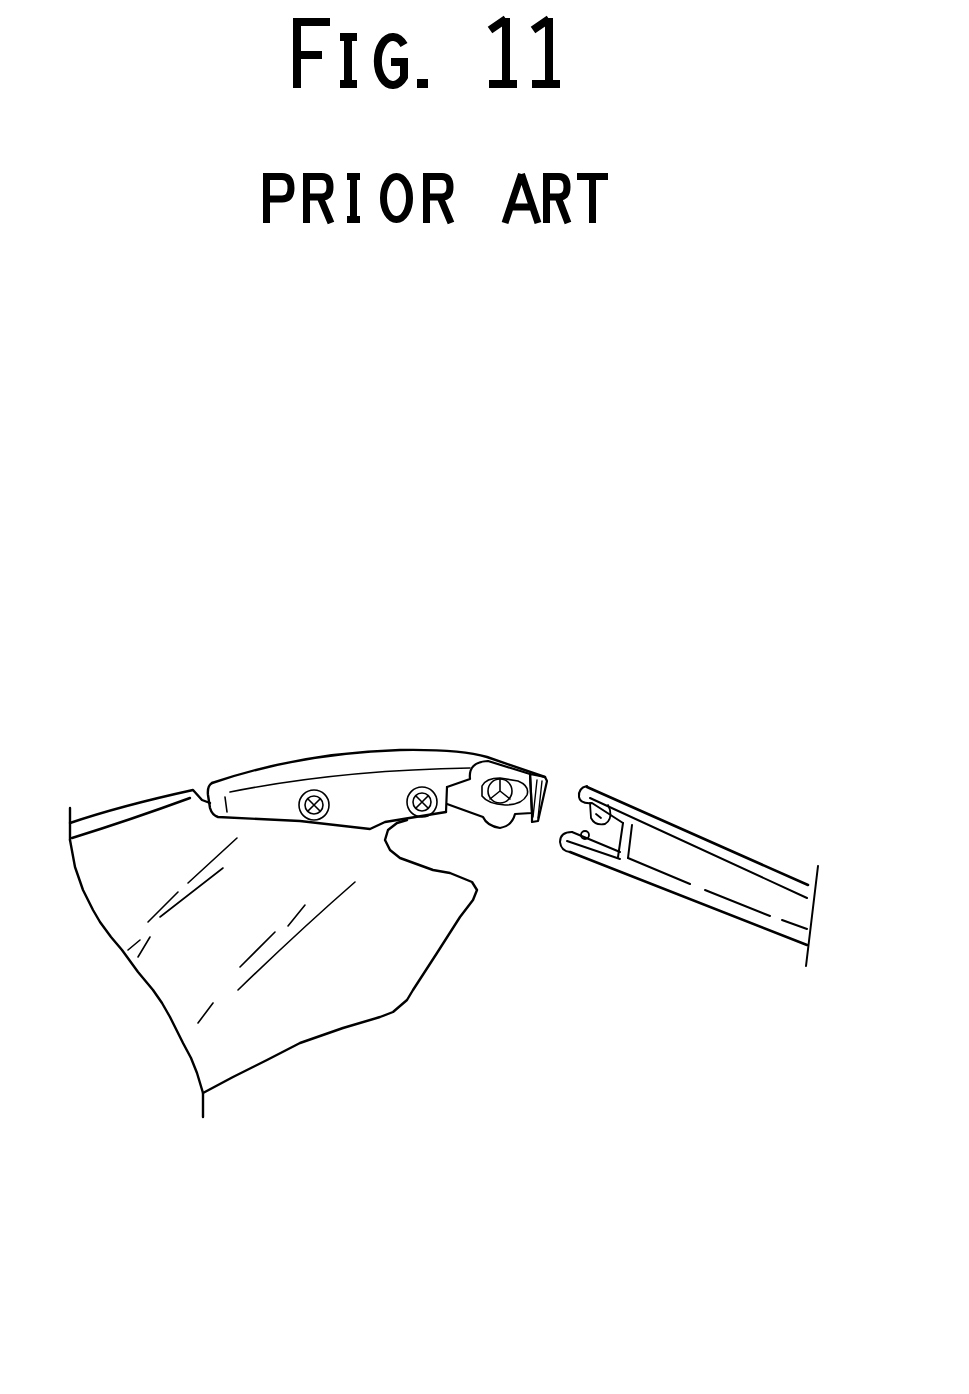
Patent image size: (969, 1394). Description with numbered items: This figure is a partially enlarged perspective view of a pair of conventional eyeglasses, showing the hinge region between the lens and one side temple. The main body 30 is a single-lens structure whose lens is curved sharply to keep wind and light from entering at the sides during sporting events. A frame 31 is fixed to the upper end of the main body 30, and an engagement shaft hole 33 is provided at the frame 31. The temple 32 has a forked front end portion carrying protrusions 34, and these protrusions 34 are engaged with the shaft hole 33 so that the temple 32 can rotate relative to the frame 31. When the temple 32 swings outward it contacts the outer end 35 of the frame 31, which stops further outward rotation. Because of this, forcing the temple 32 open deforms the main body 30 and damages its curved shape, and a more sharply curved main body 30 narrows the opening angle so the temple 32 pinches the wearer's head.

The main body 30 is at (283, 1030).
The frame 31 is at (360, 762).
The temple 32 is at (728, 853).
The engagement shaft hole 33 is at (500, 790).
The protrusion 34 is at (612, 812).
The outer end 35 is at (545, 776).